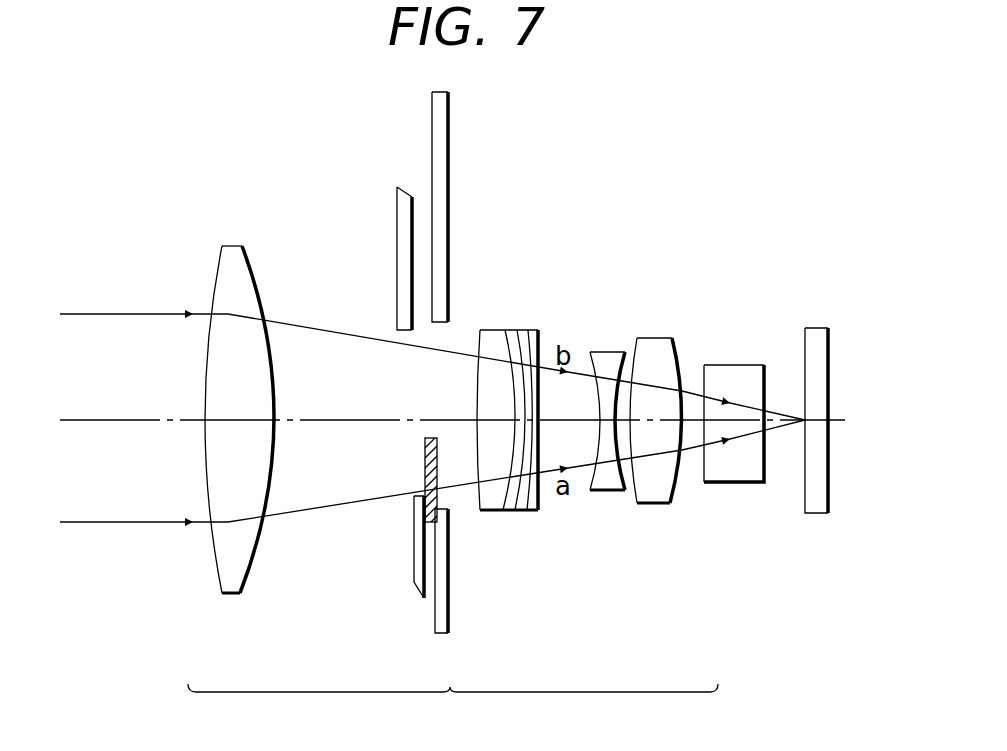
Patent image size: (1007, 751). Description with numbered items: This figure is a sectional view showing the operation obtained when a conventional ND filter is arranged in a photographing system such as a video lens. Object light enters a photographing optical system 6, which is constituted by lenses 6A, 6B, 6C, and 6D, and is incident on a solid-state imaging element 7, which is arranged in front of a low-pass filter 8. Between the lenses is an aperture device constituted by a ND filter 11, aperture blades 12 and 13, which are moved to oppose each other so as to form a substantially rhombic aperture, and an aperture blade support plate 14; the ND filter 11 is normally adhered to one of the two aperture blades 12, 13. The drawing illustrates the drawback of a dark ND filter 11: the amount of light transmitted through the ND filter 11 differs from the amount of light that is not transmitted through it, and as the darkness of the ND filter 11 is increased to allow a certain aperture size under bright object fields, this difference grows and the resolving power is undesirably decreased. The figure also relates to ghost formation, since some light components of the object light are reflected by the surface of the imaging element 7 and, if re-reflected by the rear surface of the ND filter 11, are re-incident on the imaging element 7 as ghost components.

The photographing optical system 6 is at (453, 708).
The lens 6A is at (231, 594).
The lens 6B is at (497, 512).
The lens 6C is at (612, 488).
The lens 6D is at (656, 495).
The solid-state imaging element 7 is at (813, 510).
The low-pass filter 8 is at (737, 470).
The ND filter 11 is at (425, 462).
The aperture blade 12 is at (413, 578).
The aperture blade 13 is at (400, 258).
The aperture blade support plate 14 is at (443, 125).